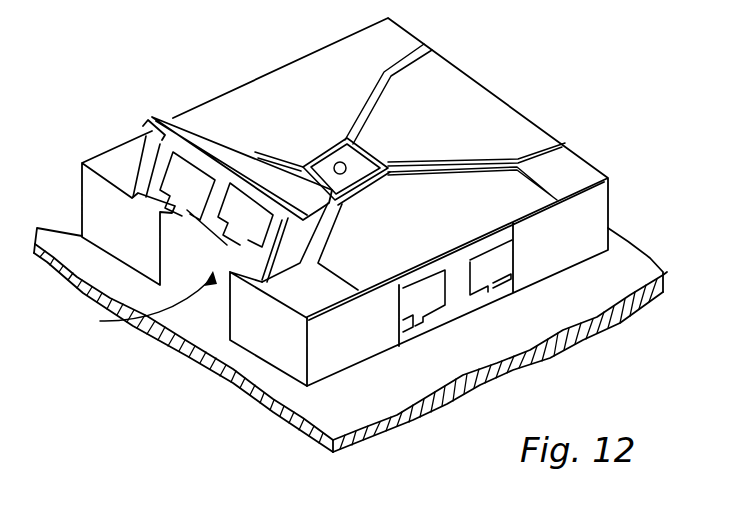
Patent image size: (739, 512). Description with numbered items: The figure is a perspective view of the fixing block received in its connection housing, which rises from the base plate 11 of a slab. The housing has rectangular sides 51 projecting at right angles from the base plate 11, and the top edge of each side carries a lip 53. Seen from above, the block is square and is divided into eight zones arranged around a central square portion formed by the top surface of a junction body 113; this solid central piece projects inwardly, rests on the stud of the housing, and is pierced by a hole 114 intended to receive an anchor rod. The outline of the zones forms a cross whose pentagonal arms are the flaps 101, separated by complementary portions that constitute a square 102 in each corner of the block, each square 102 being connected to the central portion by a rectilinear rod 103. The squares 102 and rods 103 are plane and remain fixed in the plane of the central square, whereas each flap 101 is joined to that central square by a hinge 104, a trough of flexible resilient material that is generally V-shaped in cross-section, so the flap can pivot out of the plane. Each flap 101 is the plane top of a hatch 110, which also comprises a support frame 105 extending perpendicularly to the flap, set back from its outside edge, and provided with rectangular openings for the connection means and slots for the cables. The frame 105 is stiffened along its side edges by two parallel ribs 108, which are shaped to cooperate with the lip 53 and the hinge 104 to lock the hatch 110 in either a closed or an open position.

The base plate 11 is at (448, 384).
The rectangular side 51 is at (272, 347).
The lip 53 is at (153, 200).
The flap 101 is at (279, 84).
The square 102 is at (403, 43).
The rectilinear rod 103 is at (497, 167).
The hinge 104 is at (376, 185).
The support frame 105 is at (208, 228).
The rib 108 is at (156, 130).
The hatch 110 is at (140, 302).
The junction body 113 is at (365, 160).
The hole 114 is at (336, 163).